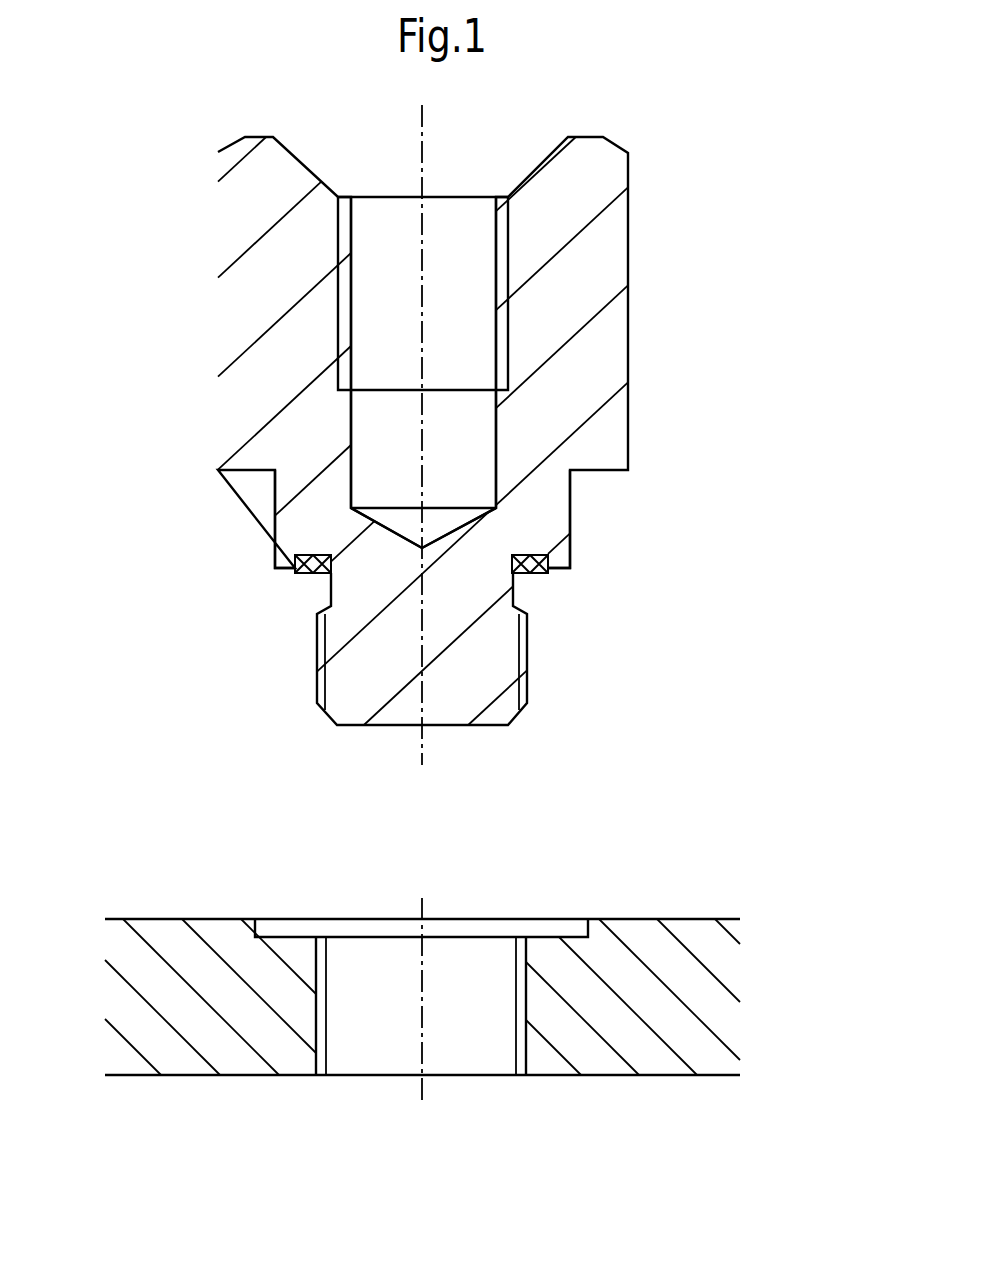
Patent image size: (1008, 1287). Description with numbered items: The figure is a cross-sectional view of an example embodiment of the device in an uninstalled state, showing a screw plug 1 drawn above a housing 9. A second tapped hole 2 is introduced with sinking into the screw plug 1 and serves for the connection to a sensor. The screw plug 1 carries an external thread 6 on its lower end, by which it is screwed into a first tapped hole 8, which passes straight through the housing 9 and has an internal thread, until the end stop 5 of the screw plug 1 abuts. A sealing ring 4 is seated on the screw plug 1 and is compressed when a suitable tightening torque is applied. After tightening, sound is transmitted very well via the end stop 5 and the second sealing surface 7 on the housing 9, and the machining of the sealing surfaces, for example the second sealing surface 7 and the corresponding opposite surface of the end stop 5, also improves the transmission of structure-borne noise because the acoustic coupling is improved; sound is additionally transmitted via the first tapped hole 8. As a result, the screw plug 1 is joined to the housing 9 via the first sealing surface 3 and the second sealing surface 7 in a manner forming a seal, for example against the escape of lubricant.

The screw plug 1 is at (258, 218).
The second tapped hole with sinking 2 is at (465, 257).
The first sealing surface 3 is at (519, 555).
The sealing ring 4 is at (547, 555).
The end stop 5 is at (550, 568).
The external thread 6 is at (520, 657).
The second sealing surface 7 is at (548, 937).
The first tapped hole with internal thread, straight through 8 is at (320, 1028).
The housing 9 is at (202, 1024).